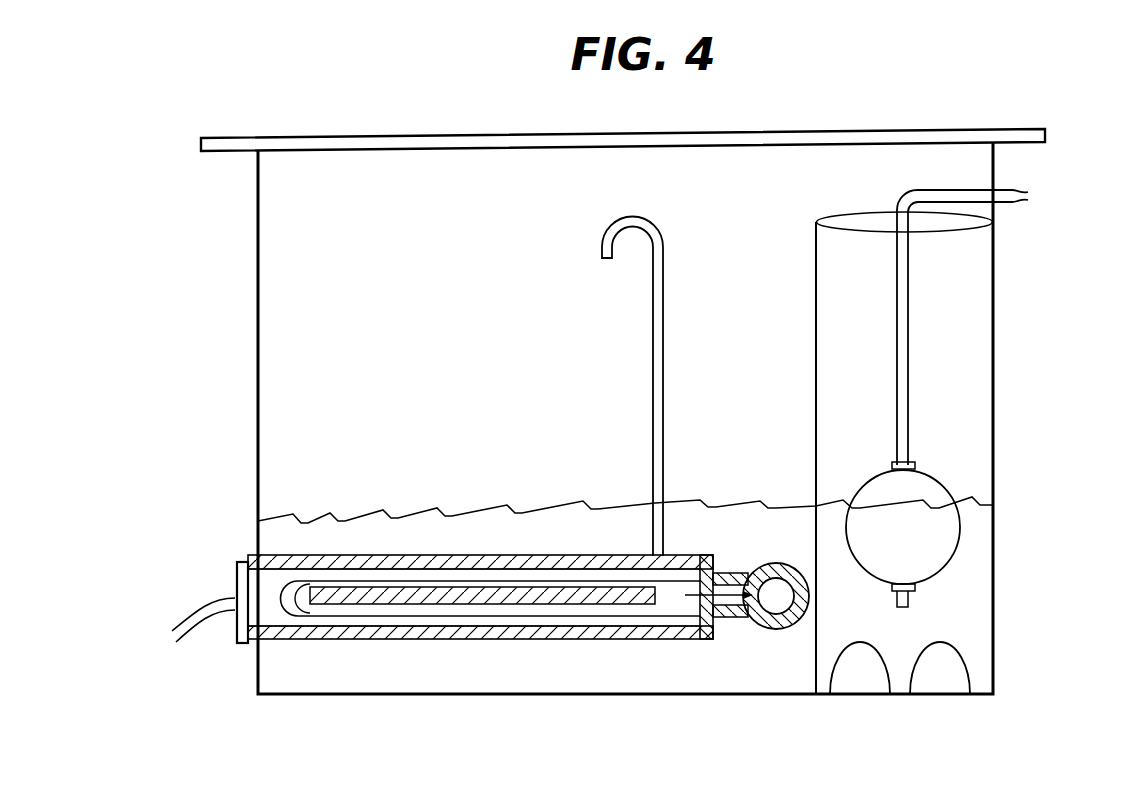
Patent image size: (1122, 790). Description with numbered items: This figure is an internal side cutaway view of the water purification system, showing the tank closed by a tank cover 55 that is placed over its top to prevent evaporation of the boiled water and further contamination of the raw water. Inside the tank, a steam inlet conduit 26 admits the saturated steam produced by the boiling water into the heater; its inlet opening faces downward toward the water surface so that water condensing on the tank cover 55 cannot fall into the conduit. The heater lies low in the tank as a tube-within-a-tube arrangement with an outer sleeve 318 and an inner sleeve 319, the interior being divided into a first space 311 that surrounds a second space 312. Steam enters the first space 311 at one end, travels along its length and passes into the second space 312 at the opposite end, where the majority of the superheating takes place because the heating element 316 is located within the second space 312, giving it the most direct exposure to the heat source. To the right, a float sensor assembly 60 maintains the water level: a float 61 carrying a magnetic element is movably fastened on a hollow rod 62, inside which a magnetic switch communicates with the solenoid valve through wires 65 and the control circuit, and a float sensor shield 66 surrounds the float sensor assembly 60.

The tank cover 55 is at (313, 138).
The float sensor assembly 60 is at (1010, 539).
The steam inlet conduit 26 is at (606, 266).
The float sensor shield 66 is at (815, 290).
The wires 65 is at (1027, 191).
The hollow rod 62 is at (908, 311).
The float 61 is at (935, 481).
The outer sleeve 318 is at (668, 640).
The inner sleeve 319 is at (522, 618).
The first space 311 is at (318, 578).
The second space 312 is at (358, 613).
The heating element 316 is at (427, 604).